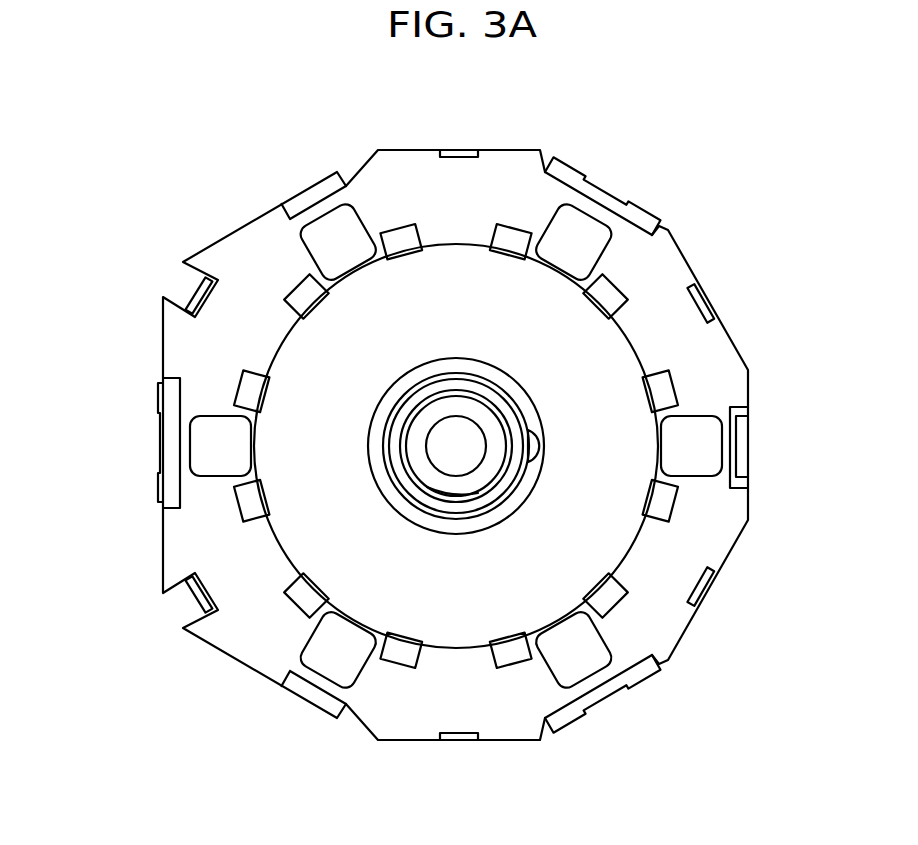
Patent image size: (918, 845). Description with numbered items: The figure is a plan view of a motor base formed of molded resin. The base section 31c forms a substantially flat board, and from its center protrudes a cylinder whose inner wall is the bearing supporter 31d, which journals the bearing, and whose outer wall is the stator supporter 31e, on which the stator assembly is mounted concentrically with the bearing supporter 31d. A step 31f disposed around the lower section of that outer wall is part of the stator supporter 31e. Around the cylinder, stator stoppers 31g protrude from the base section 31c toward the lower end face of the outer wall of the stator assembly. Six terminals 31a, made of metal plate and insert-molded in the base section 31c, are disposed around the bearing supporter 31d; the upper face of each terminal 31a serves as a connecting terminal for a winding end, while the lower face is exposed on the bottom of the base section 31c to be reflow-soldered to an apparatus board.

The terminals 31a is at (175, 465).
The base section 31c is at (245, 640).
The bearing supporter 31d is at (477, 493).
The stator supporter 31e is at (488, 377).
The step 31f is at (460, 365).
The stator stopper 31g is at (300, 293).